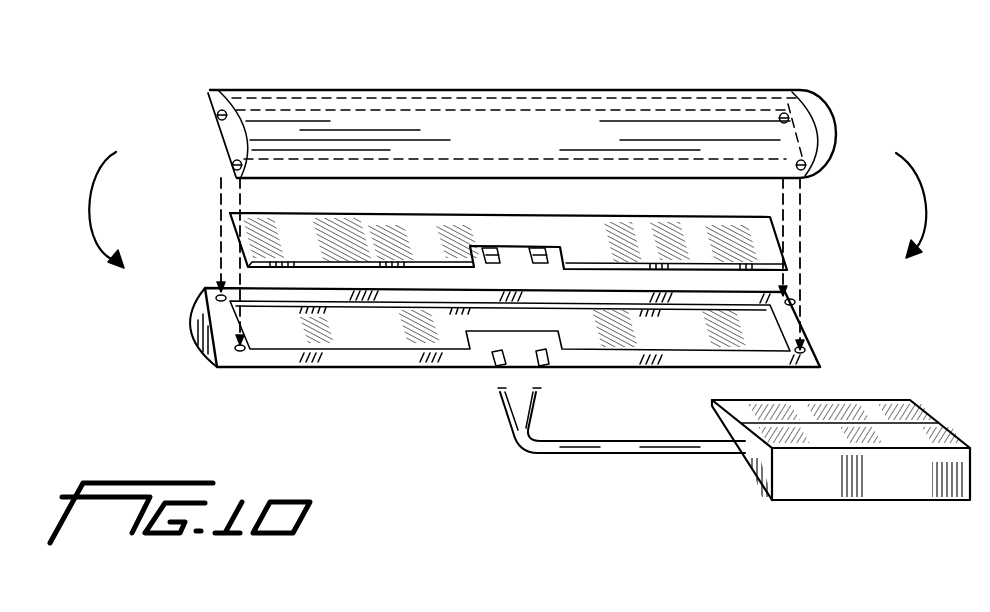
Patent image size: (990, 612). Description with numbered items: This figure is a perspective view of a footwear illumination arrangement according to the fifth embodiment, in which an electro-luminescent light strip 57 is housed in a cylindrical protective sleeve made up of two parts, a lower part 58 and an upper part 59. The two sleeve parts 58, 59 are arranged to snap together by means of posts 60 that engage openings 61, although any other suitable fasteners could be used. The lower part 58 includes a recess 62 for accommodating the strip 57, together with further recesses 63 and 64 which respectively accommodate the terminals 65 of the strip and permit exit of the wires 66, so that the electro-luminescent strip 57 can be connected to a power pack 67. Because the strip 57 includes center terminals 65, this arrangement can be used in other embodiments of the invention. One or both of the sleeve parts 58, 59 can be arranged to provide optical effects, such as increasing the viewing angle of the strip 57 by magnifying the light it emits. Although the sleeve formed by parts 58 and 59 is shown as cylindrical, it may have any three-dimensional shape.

The electro-luminescent light strip 57 is at (772, 245).
The lower part of protective sleeve 58 is at (195, 320).
The upper part of protective sleeve 59 is at (455, 122).
The posts 60 is at (237, 164).
The openings 61 is at (214, 365).
The recess 62 is at (390, 332).
The recess 63 is at (492, 352).
The recess 64 is at (546, 366).
The terminals 65 is at (540, 247).
The wires 66 is at (670, 452).
The power pack 67 is at (890, 405).